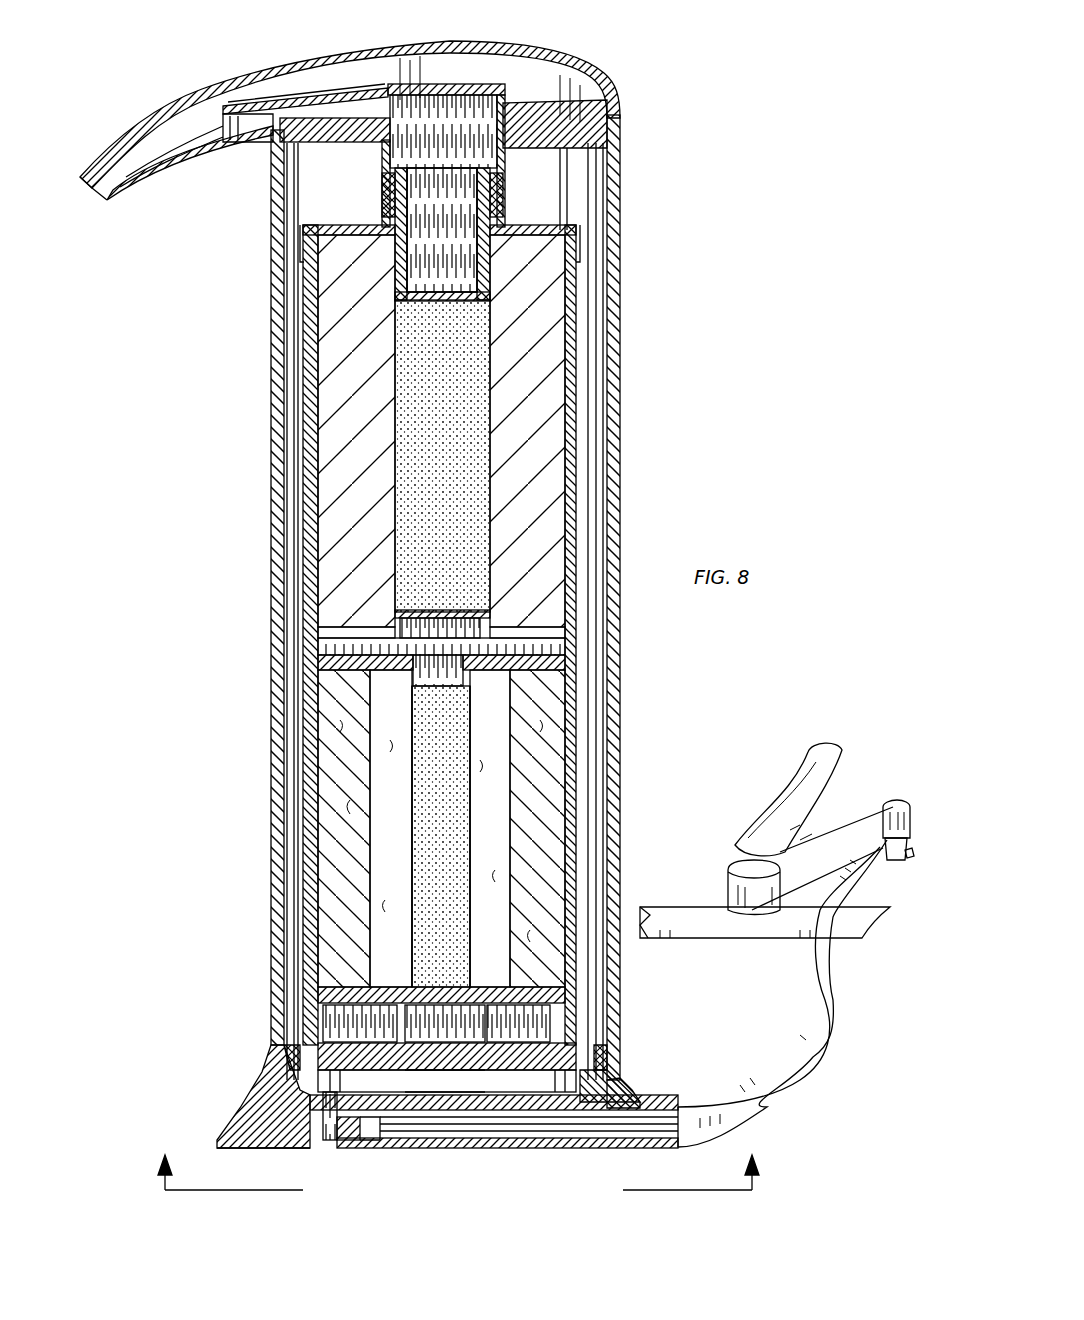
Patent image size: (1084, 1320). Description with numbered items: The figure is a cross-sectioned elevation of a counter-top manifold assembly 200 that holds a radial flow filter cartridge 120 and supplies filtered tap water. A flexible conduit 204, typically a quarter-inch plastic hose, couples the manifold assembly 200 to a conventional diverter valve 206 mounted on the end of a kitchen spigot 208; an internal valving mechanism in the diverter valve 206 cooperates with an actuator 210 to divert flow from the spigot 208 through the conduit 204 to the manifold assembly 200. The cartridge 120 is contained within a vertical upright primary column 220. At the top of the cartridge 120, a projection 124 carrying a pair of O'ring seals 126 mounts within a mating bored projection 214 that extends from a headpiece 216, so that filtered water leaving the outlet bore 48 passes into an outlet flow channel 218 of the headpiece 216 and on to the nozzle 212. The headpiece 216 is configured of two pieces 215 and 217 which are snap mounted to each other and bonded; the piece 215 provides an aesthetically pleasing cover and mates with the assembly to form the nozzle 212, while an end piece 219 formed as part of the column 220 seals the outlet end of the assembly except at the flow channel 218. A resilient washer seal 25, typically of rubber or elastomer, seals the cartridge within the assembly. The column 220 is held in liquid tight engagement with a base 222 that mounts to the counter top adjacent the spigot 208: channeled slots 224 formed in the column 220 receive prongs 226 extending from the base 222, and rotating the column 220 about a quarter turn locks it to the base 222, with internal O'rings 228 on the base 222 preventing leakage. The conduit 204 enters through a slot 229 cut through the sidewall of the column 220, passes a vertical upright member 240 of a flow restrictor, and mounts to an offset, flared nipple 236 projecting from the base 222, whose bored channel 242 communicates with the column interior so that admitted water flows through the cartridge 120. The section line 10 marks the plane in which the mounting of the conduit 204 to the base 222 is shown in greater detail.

The section line 10 is at (455, 1172).
The resilient washer seal 25 is at (495, 1070).
The outlet bore 48 is at (441, 292).
The filter cartridge 120 is at (578, 450).
The projection 124 is at (505, 172).
The O'ring seals 126 is at (382, 205).
The manifold assembly 200 is at (712, 362).
The flexible conduit 204 is at (833, 990).
The diverter valve 206 is at (878, 858).
The spigot 208 is at (848, 806).
The actuator 210 is at (915, 848).
The nozzle 212 is at (103, 195).
The bored projection 214 is at (500, 200).
The headpiece cover piece 215 is at (618, 110).
The headpiece 216 is at (578, 62).
The headpiece piece 217 is at (130, 185).
The outlet flow channel 218 is at (330, 118).
The end piece 219 is at (565, 150).
The primary column 220 is at (271, 430).
The base 222 is at (298, 1150).
The channeled slots 224 is at (270, 1105).
The prongs 226 is at (280, 1087).
The internal O'rings 228 is at (617, 1052).
The slot 229 is at (628, 1108).
The flared nipple 236 is at (370, 1145).
The vertical upright member 240 is at (430, 1150).
The bored channel 242 is at (325, 1130).